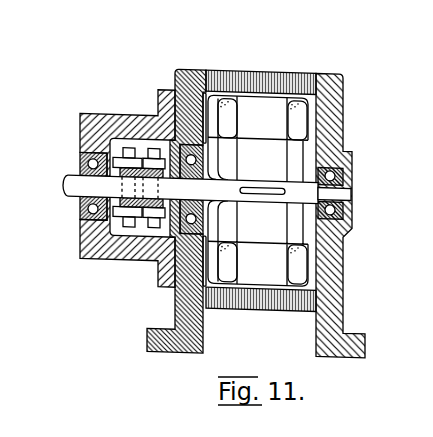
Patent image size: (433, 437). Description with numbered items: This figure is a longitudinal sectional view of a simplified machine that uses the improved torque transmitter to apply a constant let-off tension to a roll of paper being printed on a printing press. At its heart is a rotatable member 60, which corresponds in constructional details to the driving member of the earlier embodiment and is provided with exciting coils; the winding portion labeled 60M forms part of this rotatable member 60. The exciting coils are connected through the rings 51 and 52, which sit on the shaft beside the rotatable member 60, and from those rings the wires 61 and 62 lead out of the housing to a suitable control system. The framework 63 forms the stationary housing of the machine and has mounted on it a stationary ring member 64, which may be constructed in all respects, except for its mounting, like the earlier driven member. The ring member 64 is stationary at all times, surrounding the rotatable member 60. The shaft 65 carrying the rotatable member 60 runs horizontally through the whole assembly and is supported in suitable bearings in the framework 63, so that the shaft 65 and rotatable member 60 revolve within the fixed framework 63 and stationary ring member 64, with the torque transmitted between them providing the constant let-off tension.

The ring 51 is at (128, 229).
The ring 52 is at (155, 229).
The rotatable member 60 is at (258, 190).
The rotor winding 60M is at (230, 263).
The wire 61 is at (206, 104).
The wire 62 is at (207, 102).
The framework 63 is at (340, 268).
The stationary ring member 64 is at (270, 70).
The shaft 65 is at (66, 182).